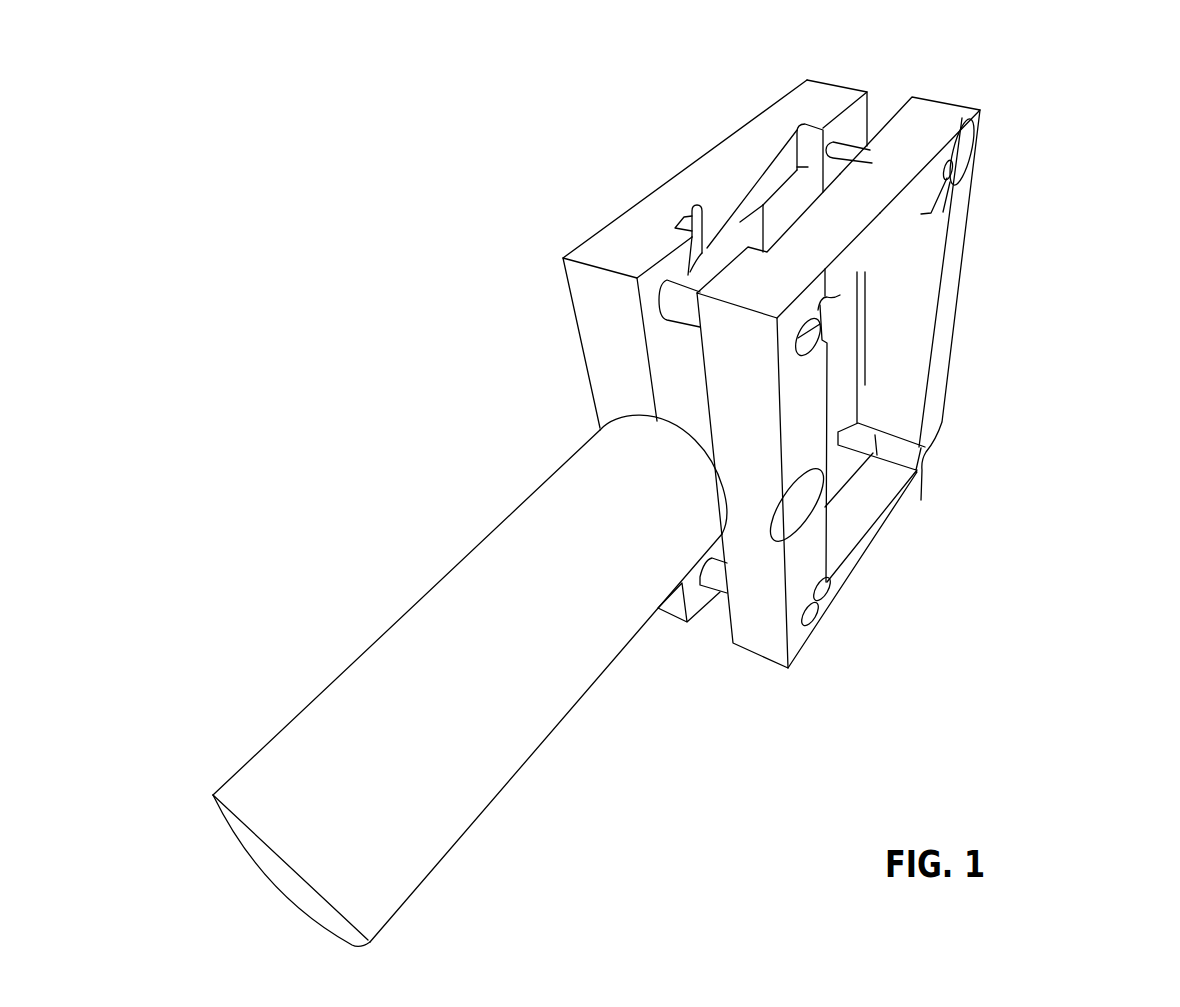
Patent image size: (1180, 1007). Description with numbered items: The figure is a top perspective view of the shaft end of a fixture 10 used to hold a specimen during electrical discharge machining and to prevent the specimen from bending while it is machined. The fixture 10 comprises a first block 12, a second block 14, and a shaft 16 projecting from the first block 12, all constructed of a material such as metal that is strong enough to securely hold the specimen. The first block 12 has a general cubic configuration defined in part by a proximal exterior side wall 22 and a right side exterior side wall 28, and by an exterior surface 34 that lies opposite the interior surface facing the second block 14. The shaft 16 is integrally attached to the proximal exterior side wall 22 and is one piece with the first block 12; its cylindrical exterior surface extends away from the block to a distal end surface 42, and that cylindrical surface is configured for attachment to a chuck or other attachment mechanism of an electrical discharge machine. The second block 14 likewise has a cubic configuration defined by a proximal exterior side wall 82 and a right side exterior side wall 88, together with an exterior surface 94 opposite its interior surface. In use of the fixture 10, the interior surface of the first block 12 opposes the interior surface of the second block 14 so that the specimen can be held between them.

The fixture 10 is at (669, 487).
The first block 12 is at (688, 248).
The second block 14 is at (850, 376).
The shaft 16 is at (453, 680).
The proximal exterior side wall 22 is at (597, 325).
The right side exterior side wall 28 is at (776, 114).
The exterior surface 34 is at (705, 152).
The distal end surface 42 is at (267, 863).
The proximal exterior side wall 82 is at (762, 635).
The right side exterior side wall 88 is at (931, 114).
The exterior surface 94 is at (948, 257).